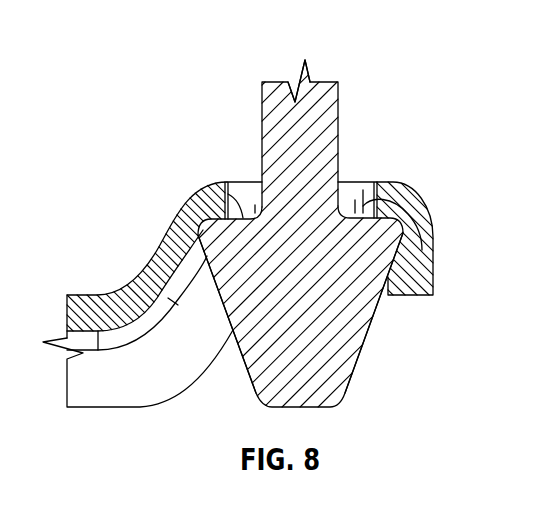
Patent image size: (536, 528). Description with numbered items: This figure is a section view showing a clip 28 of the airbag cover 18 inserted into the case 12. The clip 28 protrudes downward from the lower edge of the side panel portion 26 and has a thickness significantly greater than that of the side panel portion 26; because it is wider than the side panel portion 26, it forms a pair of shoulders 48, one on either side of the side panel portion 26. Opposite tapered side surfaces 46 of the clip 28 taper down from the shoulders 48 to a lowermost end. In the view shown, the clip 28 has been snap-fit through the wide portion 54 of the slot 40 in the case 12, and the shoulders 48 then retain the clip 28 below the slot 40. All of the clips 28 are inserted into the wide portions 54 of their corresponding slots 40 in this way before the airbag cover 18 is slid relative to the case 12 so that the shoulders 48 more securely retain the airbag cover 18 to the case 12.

The case 12 is at (97, 293).
The airbag cover 18 is at (277, 92).
The side panel portion 26 is at (341, 92).
The clip 28 is at (362, 360).
The slot 40 is at (343, 182).
The tapered side surface 46 is at (254, 386).
The shoulder 48 is at (228, 189).
The wide portion 54 is at (343, 182).